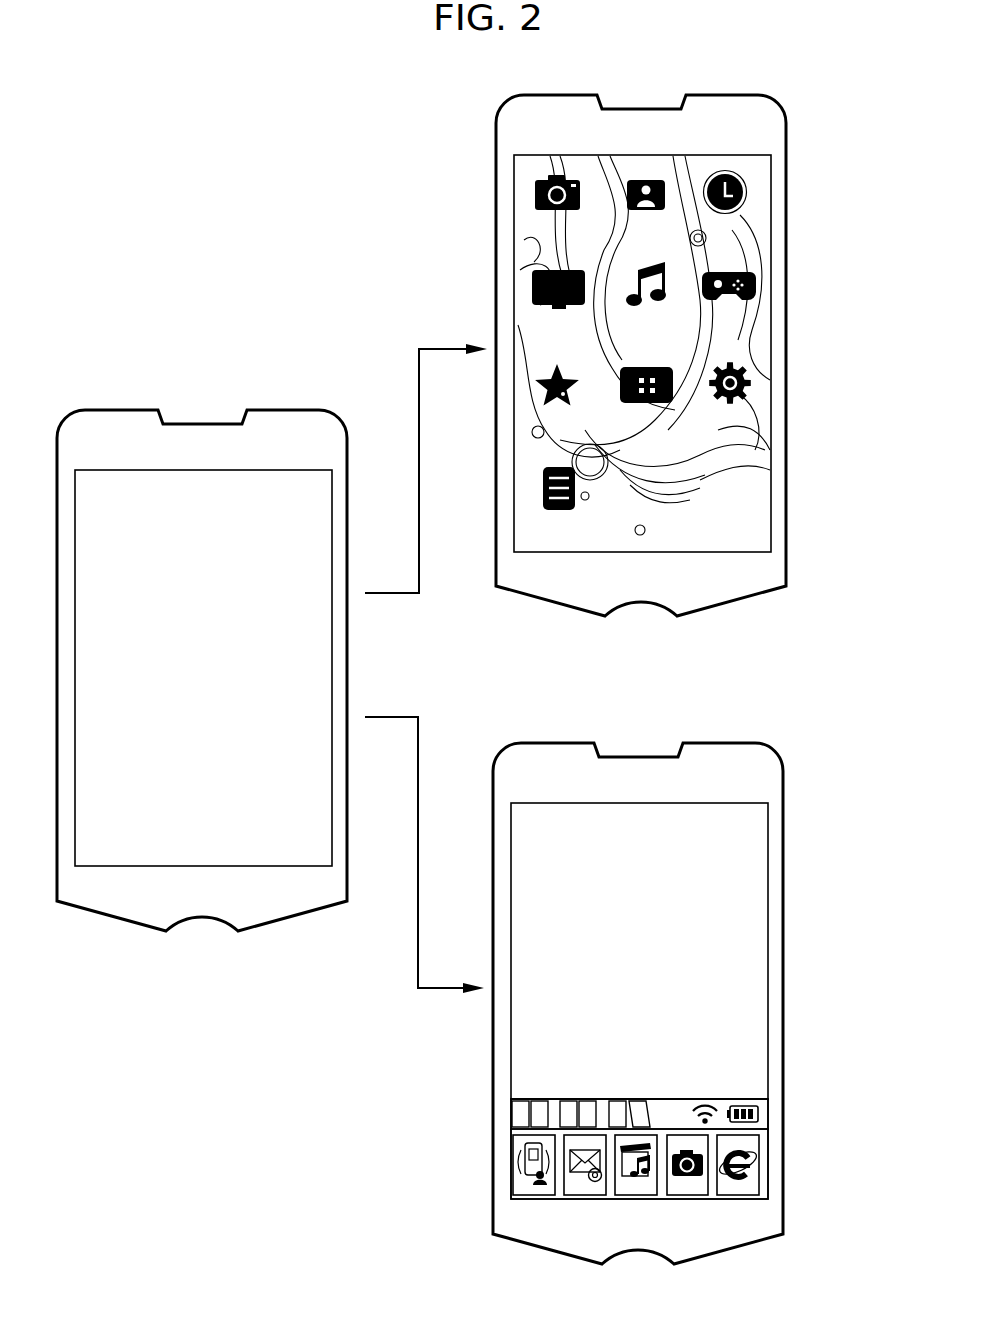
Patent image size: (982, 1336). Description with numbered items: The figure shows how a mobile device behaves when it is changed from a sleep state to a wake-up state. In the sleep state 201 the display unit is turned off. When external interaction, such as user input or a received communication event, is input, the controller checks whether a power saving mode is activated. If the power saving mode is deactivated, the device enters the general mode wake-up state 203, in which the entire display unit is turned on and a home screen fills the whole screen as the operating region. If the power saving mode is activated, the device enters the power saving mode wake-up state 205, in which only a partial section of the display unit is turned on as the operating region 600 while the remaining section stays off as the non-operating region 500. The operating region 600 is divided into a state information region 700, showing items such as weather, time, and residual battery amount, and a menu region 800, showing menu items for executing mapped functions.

The sleep state 201 is at (202, 644).
The general mode wake-up state 203 is at (641, 330).
The power saving mode wake-up state 205 is at (638, 1033).
The non-operating region 500 is at (793, 803).
The operating region 600 is at (793, 1099).
The state information region 700 is at (468, 1129).
The menu region 800 is at (468, 1199).